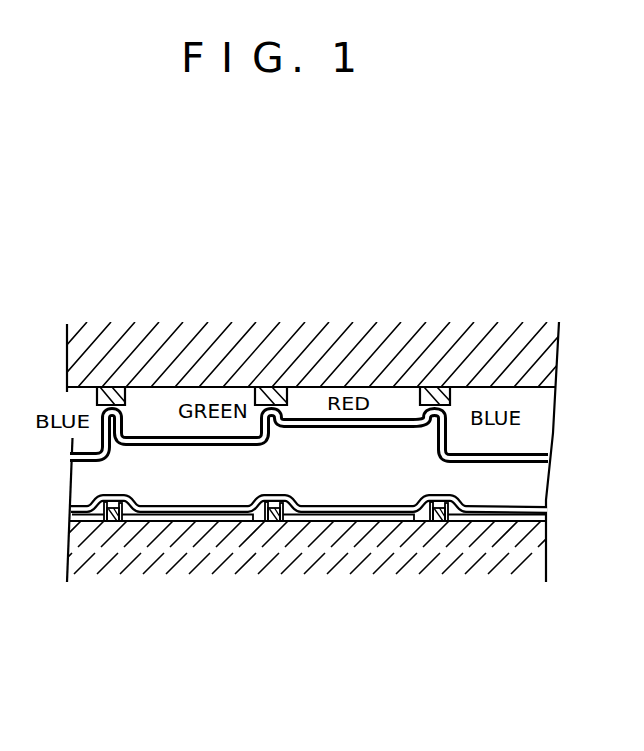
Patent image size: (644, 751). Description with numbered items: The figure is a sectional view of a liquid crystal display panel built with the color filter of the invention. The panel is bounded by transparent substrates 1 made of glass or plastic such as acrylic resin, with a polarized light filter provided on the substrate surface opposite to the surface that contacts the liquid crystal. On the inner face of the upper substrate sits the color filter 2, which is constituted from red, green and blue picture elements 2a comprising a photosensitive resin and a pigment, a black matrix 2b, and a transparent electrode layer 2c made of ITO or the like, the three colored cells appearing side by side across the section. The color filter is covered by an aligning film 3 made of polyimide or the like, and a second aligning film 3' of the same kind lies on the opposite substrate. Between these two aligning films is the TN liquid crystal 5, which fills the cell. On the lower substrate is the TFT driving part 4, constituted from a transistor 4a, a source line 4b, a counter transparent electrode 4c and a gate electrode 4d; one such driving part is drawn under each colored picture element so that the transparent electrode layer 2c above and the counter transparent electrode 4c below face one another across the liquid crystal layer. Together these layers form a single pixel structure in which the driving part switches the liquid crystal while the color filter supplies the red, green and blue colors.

The transparent substrate 1 is at (540, 353).
The color filter 2 is at (273, 349).
The picture elements 2a is at (377, 353).
The black matrix 2b is at (273, 398).
The transparent electrode layer 2c is at (162, 442).
The aligning film 3 is at (333, 435).
The aligning film 3' is at (336, 495).
The TFT driving part 4 is at (301, 592).
The transistor 4a is at (116, 522).
The source line 4b is at (107, 522).
The counter transparent electrode 4c is at (144, 513).
The gate electrode 4d is at (102, 523).
The TN liquid crystal 5 is at (358, 492).